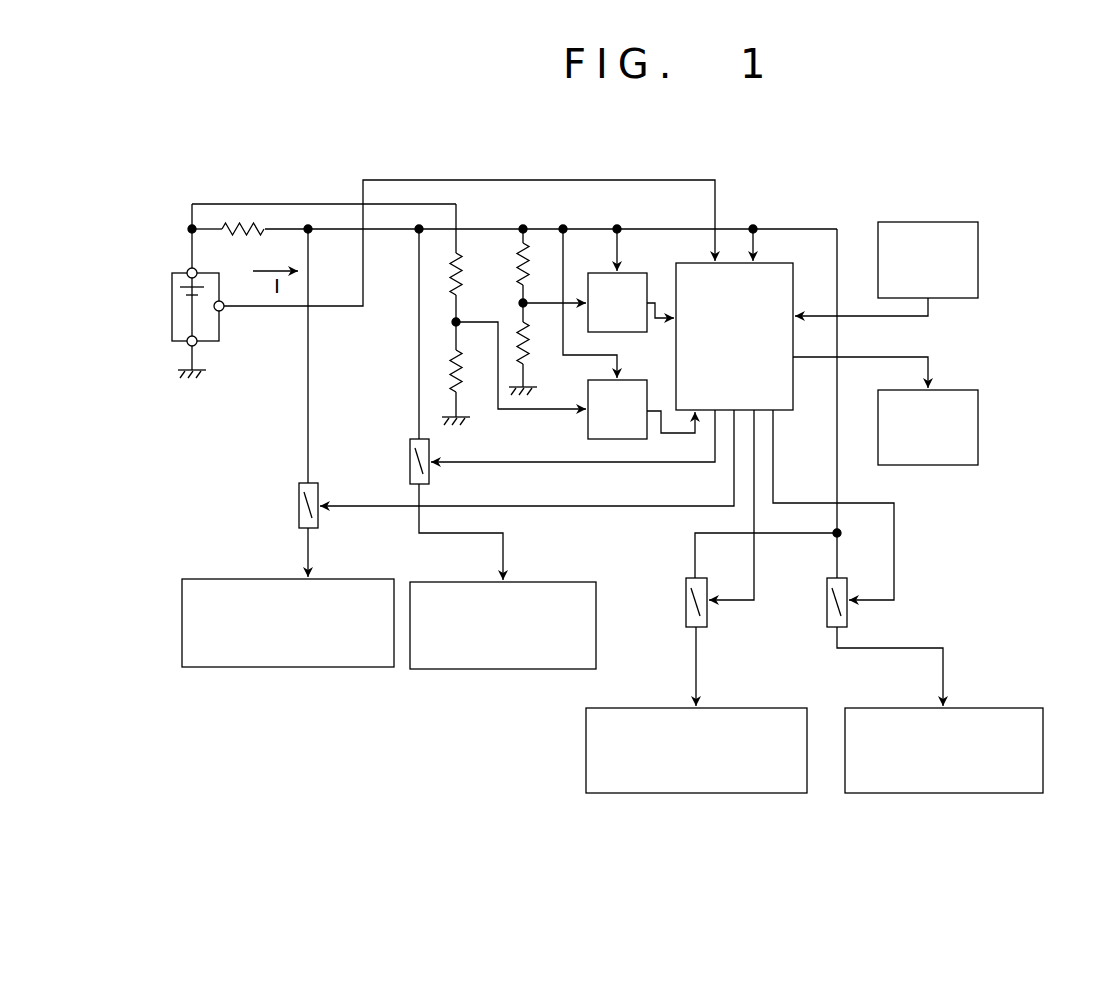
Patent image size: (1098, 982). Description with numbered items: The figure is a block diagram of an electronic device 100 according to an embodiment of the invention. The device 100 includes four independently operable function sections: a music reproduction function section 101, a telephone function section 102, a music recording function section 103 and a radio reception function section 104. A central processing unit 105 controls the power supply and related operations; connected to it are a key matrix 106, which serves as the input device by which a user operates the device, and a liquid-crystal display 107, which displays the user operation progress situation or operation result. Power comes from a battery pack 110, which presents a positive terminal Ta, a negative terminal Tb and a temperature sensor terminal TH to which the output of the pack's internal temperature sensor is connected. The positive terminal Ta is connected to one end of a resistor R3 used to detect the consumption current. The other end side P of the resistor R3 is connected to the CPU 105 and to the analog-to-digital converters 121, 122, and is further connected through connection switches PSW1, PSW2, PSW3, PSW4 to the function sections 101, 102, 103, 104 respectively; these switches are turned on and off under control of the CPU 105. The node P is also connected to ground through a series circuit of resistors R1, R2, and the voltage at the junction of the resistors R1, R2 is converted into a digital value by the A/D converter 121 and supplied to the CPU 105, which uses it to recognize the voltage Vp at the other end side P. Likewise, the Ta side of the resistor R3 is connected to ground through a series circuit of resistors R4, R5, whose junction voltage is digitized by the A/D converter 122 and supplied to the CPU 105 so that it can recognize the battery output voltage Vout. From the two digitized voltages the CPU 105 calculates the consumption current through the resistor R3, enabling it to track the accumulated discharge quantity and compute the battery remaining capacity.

The electronic device 100 is at (1076, 662).
The music reproduction function section 101 is at (303, 667).
The telephone function section 102 is at (490, 669).
The music recording function section 103 is at (688, 793).
The radio reception function section 104 is at (951, 793).
The central processing unit 105 is at (793, 397).
The key matrix 106 is at (930, 222).
The liquid-crystal display 107 is at (923, 465).
The battery pack 110 is at (183, 343).
The A/D converter 121 is at (622, 272).
The A/D converter 122 is at (588, 430).
The other end side of resistor R3 P is at (291, 225).
The resistor R1 is at (538, 264).
The resistor R2 is at (538, 343).
The consumption current detection resistor R3 is at (243, 241).
The resistor R4 is at (471, 274).
The resistor R5 is at (471, 371).
The positive terminal Ta is at (188, 268).
The negative terminal Tb is at (187, 338).
The temperature sensor terminal TH is at (224, 310).
The connection switch PSW1 is at (299, 490).
The connection switch PSW2 is at (410, 447).
The connection switch PSW3 is at (686, 612).
The connection switch PSW4 is at (827, 612).